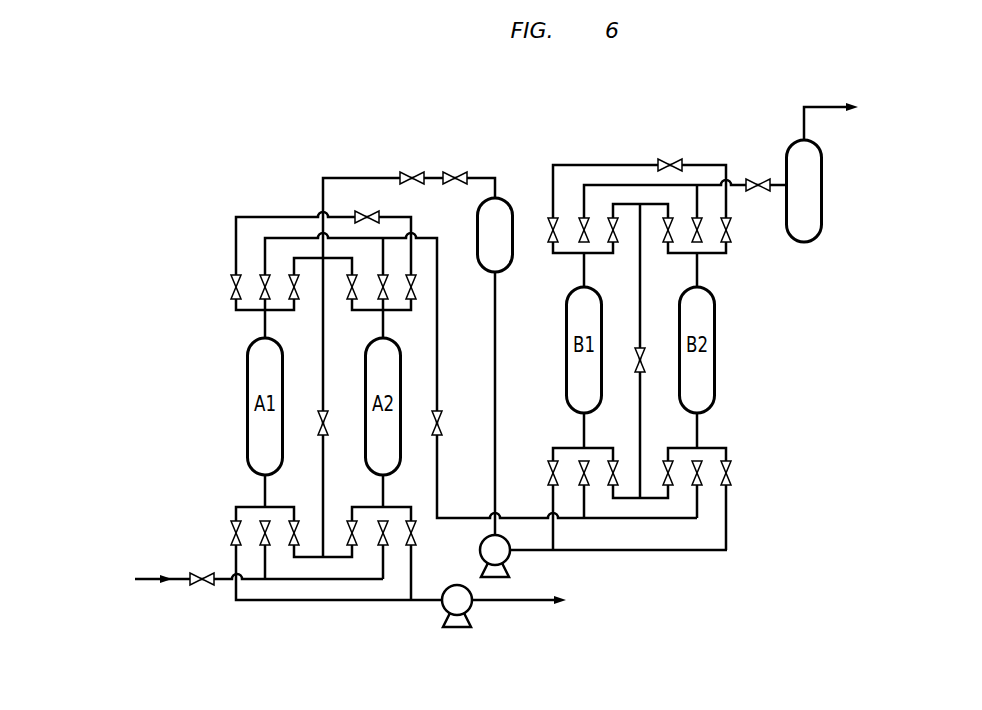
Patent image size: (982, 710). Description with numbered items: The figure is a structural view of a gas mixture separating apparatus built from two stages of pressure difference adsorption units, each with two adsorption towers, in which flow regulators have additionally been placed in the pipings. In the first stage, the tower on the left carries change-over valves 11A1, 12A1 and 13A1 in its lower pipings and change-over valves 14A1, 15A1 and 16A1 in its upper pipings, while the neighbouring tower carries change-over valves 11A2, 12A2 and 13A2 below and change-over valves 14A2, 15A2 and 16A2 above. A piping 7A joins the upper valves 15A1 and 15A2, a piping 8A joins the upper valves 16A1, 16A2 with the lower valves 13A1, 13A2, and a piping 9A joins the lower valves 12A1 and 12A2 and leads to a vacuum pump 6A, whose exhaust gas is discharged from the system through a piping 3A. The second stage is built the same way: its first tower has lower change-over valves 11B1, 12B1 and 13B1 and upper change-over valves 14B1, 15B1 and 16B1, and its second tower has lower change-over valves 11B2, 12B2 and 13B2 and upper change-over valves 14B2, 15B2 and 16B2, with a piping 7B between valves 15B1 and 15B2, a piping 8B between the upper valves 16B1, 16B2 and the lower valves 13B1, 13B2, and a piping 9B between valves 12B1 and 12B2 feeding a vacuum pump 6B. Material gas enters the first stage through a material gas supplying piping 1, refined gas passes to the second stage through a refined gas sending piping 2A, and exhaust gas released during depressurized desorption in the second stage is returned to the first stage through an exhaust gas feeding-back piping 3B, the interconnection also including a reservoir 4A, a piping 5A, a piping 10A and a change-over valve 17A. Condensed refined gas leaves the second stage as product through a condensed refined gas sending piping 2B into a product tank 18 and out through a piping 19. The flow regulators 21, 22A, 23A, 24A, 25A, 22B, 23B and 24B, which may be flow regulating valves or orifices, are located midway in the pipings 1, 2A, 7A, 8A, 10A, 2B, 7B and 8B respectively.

The material gas supplying piping 1 is at (145, 583).
The flow regulator 21 is at (202, 587).
The refined gas sending piping 2A is at (438, 290).
The condensed refined gas sending piping 2B is at (737, 183).
The piping 3A is at (528, 603).
The exhaust gas feeding-back piping 3B is at (497, 310).
The reservoir 4A is at (513, 266).
The piping 5A is at (476, 176).
The vacuum pump 6A is at (453, 586).
The vacuum pump 6B is at (483, 545).
The piping 7A is at (277, 215).
The piping 7B is at (613, 163).
The piping 8A is at (324, 333).
The piping 8B is at (641, 278).
The piping 9A is at (427, 603).
The piping 9B is at (540, 552).
The piping 10A is at (333, 177).
The change-over valve 17A is at (455, 170).
The product tank 18 is at (823, 178).
The piping 19 is at (823, 105).
The flow regulator 22A is at (442, 426).
The flow regulator 22B is at (758, 178).
The flow regulator 23A is at (367, 209).
The flow regulator 23B is at (672, 158).
The flow regulator 24A is at (330, 424).
The flow regulator 24B is at (644, 362).
The flow regulator 25A is at (413, 170).
The change-over valve 11A1 is at (259, 530).
The change-over valve 12A1 is at (230, 535).
The change-over valve 13A1 is at (288, 528).
The change-over valve 14A1 is at (258, 280).
The change-over valve 15A1 is at (228, 288).
The change-over valve 16A1 is at (287, 280).
The change-over valve 11A2 is at (382, 547).
The change-over valve 12A2 is at (410, 547).
The change-over valve 13A2 is at (352, 547).
The change-over valve 14A2 is at (385, 290).
The change-over valve 15A2 is at (412, 290).
The change-over valve 16A2 is at (354, 290).
The change-over valve 11B1 is at (588, 478).
The change-over valve 12B1 is at (557, 478).
The change-over valve 13B1 is at (617, 478).
The change-over valve 14B1 is at (580, 218).
The change-over valve 15B1 is at (550, 218).
The change-over valve 16B1 is at (608, 218).
The change-over valve 11B2 is at (702, 470).
The change-over valve 12B2 is at (731, 471).
The change-over valve 13B2 is at (673, 470).
The change-over valve 14B2 is at (705, 233).
The change-over valve 15B2 is at (733, 232).
The change-over valve 16B2 is at (675, 232).